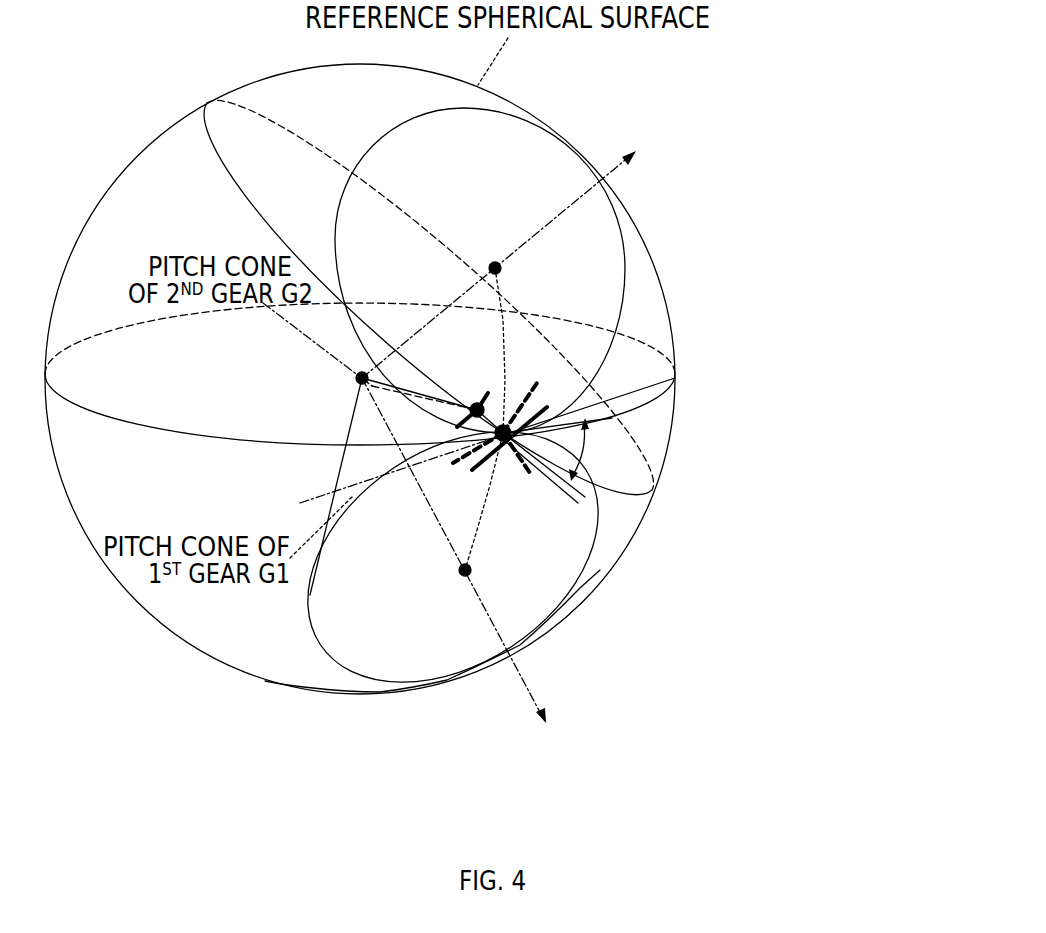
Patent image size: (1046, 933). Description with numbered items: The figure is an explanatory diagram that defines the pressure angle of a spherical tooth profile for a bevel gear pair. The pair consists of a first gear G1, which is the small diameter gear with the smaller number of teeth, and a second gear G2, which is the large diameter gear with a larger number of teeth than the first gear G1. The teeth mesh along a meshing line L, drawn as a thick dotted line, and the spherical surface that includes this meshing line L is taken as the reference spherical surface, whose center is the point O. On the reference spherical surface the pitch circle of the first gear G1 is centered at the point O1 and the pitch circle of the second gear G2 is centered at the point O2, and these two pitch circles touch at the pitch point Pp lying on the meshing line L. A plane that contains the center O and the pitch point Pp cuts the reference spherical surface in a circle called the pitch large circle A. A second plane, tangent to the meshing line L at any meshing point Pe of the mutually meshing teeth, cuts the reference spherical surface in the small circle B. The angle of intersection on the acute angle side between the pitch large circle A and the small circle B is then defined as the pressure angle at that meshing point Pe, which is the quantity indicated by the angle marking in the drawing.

The pitch large circle A is at (671, 409).
The small circle B is at (252, 205).
The center of the reference spherical surface O is at (407, 387).
The center of pitch circle of first gear O1 is at (465, 570).
The center of pitch circle of second gear O2 is at (495, 268).
The first gear G1 is at (540, 415).
The second gear G2 is at (528, 397).
The meshing point Pe is at (477, 403).
The pitch point Pp is at (500, 441).
The meshing line L is at (480, 448).